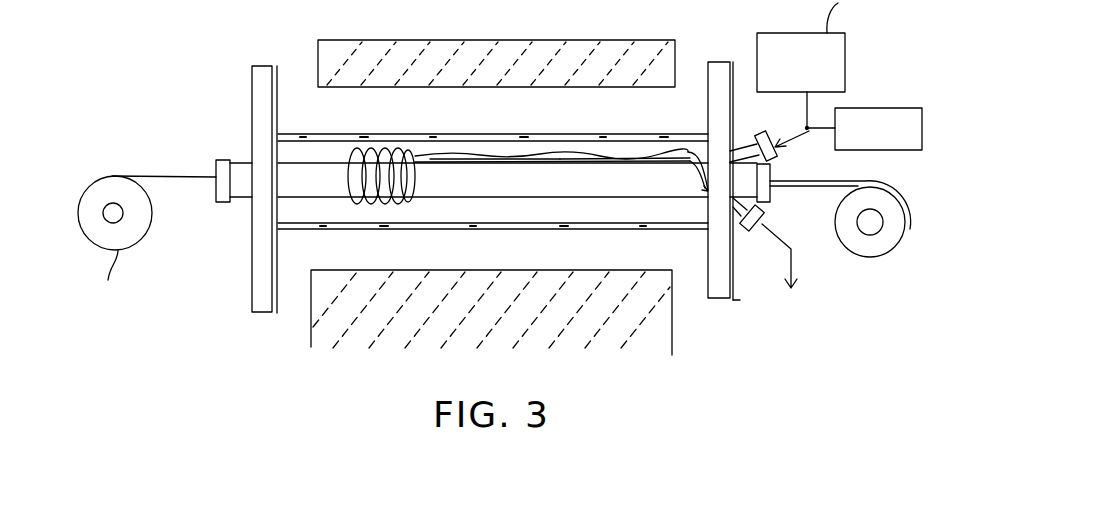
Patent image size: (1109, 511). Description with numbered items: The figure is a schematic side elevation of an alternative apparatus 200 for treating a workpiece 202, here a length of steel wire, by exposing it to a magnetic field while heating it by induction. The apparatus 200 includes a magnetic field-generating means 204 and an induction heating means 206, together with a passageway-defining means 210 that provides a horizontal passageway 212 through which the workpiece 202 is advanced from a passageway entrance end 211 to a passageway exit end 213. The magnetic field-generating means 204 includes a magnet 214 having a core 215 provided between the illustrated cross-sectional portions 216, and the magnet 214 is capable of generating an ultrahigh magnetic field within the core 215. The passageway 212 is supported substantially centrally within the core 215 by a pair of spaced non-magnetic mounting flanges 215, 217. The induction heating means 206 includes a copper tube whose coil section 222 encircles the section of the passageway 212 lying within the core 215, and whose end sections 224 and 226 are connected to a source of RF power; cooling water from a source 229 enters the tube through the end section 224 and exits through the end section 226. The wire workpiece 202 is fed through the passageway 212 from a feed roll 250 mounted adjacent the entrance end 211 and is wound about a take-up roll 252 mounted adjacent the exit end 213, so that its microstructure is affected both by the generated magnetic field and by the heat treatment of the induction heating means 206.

The apparatus 200 is at (207, 60).
The workpiece 202 is at (190, 177).
The magnetic field-generating means 204 is at (221, 349).
The induction heating means 206 is at (891, 42).
The passageway-defining means 210 is at (763, 367).
The passageway entrance end 211 is at (303, 136).
The passageway 212 is at (425, 200).
The passageway exit end 213 is at (678, 160).
The magnet 214 is at (473, 78).
The core 215 is at (248, 249).
The cross-sectional portions 216 is at (435, 88).
The non-magnetic mounting flange 217 is at (733, 258).
The coil section 222 is at (548, 152).
The tube end section 224 is at (633, 152).
The tube end section 226 is at (658, 163).
The cooling water source 229 is at (886, 107).
The feed roll 250 is at (107, 177).
The take-up roll 252 is at (899, 202).